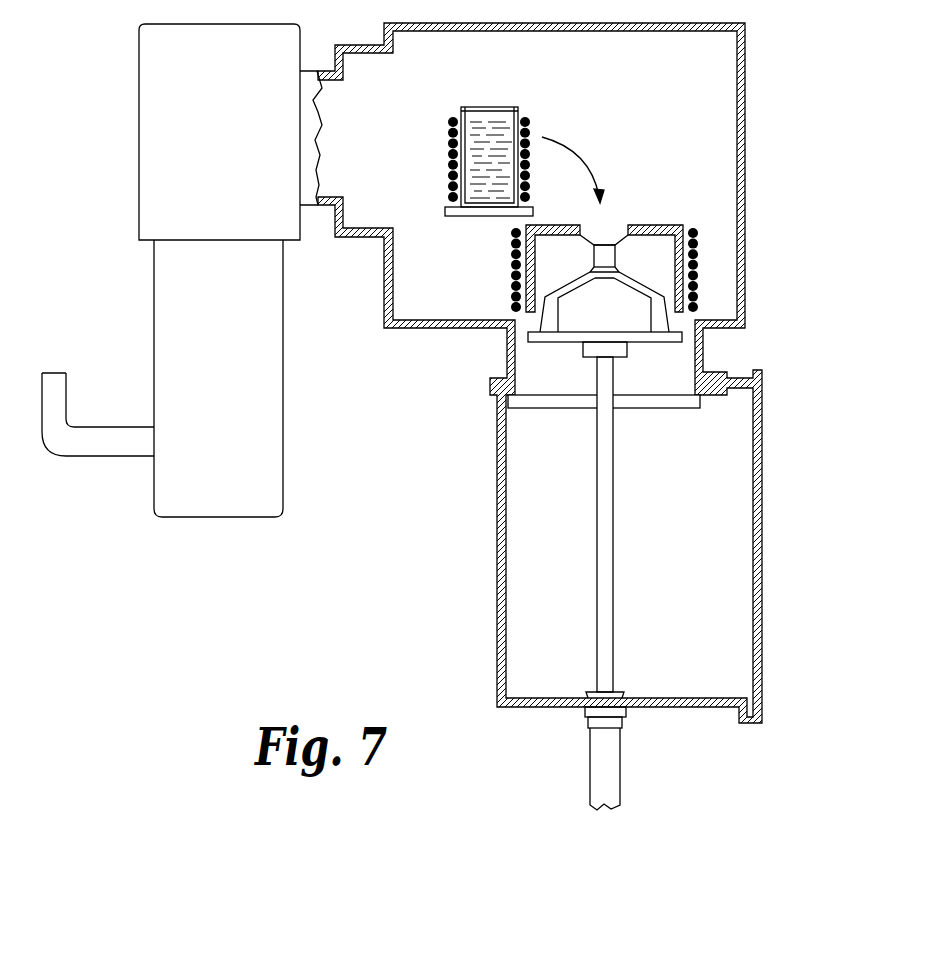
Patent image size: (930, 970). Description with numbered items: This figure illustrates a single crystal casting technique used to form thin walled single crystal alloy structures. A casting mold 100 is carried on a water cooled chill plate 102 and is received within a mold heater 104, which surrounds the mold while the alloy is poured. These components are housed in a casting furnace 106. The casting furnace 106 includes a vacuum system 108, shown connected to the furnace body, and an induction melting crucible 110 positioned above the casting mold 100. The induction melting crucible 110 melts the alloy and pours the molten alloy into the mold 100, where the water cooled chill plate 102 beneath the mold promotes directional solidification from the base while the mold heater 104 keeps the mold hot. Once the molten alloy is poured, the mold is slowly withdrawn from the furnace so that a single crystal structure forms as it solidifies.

The casting mold 100 is at (550, 322).
The water cooled chill plate 102 is at (648, 343).
The mold heater 104 is at (698, 252).
The casting furnace 106 is at (767, 142).
The vacuum system 108 is at (159, 107).
The induction melting crucible 110 is at (517, 105).